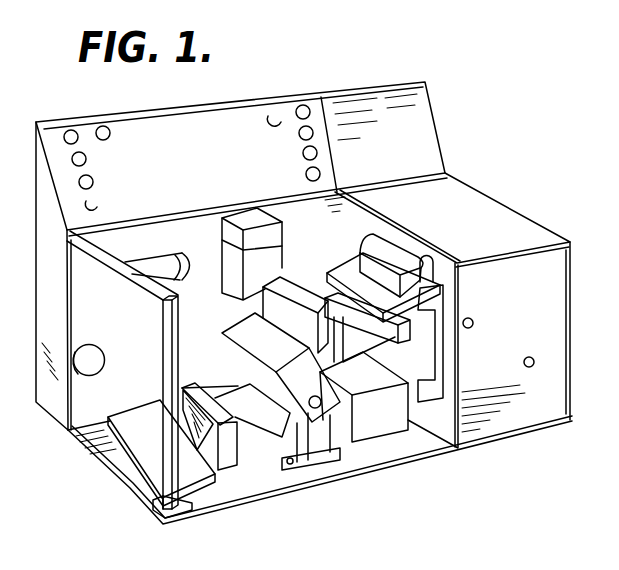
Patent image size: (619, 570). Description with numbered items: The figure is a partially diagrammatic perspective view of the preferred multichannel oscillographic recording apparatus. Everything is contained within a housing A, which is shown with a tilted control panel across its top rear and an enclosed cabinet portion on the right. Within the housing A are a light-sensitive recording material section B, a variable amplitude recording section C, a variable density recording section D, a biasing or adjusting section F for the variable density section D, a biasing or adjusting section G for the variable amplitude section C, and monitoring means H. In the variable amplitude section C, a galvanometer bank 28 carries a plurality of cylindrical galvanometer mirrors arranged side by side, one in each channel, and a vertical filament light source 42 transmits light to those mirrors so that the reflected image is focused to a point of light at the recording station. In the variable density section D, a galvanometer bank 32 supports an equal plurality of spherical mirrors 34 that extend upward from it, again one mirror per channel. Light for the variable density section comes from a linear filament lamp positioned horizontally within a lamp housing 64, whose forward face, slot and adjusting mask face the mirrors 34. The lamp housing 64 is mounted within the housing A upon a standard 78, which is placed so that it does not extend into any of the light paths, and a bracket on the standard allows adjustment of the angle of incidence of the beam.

The housing A is at (514, 205).
The light-sensitive recording material section B is at (522, 350).
The variable amplitude recording section C is at (435, 278).
The variable density recording section D is at (267, 361).
The biasing or adjusting section F is at (128, 184).
The biasing or adjusting section G is at (282, 164).
The monitoring means H is at (408, 351).
The galvanometer bank 28 is at (368, 232).
The galvanometer bank 32 is at (210, 406).
The mirrors 34 is at (196, 402).
The vertical filament light source 42 is at (160, 260).
The lamp housing 64 is at (276, 357).
The standard 78 is at (321, 456).